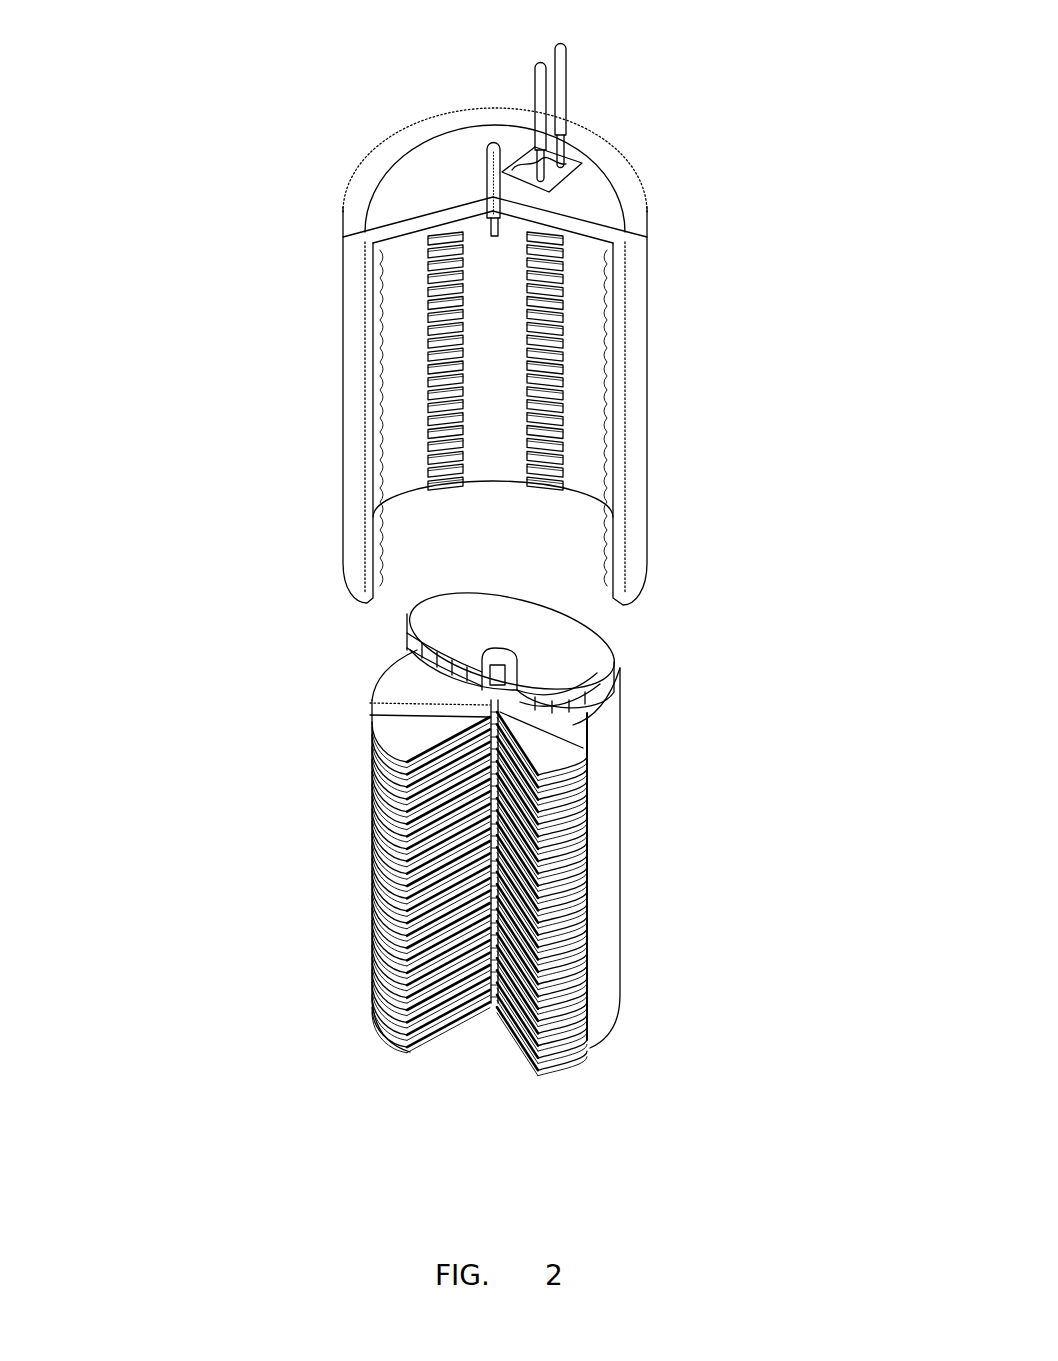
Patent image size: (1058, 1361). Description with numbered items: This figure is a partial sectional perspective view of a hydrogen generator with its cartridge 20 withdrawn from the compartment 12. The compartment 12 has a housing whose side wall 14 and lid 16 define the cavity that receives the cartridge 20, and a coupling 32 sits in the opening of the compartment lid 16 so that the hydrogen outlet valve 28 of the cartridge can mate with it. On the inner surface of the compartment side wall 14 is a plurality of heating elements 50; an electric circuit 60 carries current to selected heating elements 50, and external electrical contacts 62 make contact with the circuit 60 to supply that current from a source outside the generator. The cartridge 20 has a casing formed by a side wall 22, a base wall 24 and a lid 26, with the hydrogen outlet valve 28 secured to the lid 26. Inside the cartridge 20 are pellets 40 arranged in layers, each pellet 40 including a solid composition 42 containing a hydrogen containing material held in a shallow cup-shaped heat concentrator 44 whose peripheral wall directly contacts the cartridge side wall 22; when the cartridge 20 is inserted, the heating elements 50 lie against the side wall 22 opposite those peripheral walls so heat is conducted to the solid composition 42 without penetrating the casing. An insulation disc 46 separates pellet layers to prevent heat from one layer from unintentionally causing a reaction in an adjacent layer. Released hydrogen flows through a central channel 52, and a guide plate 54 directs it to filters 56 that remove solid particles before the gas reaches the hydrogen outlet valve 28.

The compartment 12 is at (316, 302).
The side wall 14 is at (366, 410).
The lid 16 is at (392, 198).
The cartridge 20 is at (332, 858).
The side wall 22 is at (602, 851).
The base wall 24 is at (537, 1066).
The lid 26 is at (590, 640).
The hydrogen outlet valve 28 is at (408, 610).
The coupling 32 is at (493, 188).
The pellet 40 is at (590, 892).
The solid composition 42 is at (417, 727).
The heat concentrator 44 is at (385, 775).
The insulation disc 46 is at (432, 938).
The heating element 50 is at (553, 370).
The central channel 52 is at (495, 1010).
The guide plate 54 is at (400, 660).
The filter 56 is at (592, 676).
The electric circuit 60 is at (548, 166).
The external electrical contact 62 is at (537, 85).